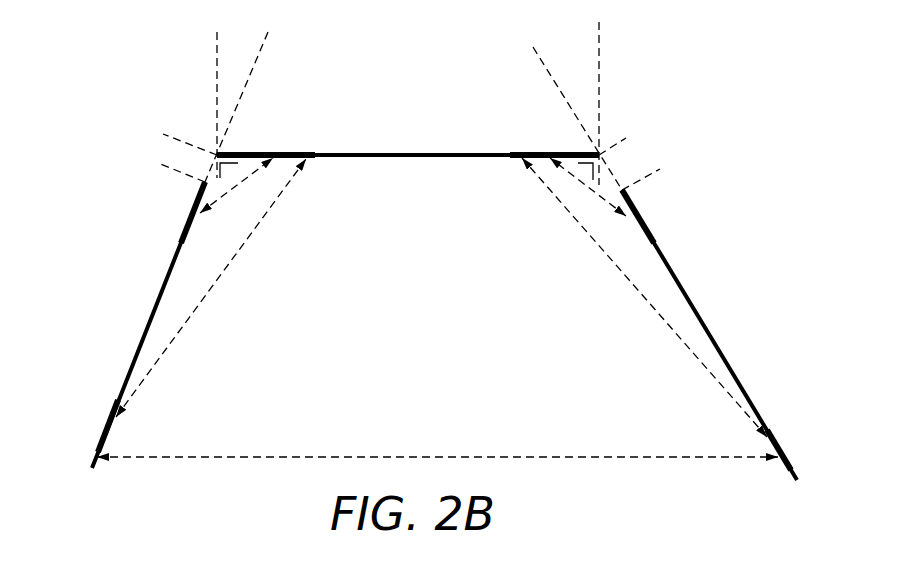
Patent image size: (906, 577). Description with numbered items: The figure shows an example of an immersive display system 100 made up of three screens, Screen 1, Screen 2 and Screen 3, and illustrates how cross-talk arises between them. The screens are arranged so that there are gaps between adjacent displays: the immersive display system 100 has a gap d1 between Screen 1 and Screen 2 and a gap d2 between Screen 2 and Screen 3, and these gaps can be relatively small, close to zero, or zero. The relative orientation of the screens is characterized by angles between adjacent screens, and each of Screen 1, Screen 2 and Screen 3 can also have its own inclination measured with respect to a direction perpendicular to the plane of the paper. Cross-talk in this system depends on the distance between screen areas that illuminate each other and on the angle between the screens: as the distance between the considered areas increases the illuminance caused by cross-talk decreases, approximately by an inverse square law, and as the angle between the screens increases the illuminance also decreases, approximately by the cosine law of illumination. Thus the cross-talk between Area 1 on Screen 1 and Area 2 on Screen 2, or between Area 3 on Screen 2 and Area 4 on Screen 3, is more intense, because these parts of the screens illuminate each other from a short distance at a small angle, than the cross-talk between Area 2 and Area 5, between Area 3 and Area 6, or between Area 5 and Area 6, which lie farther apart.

The immersive display system 100 is at (653, 72).
The screen Screen 1 is at (158, 299).
The screen Screen 2 is at (398, 152).
The screen Screen 3 is at (725, 360).
The screen area Area 1 is at (194, 215).
The screen area Area 2 is at (283, 151).
The screen area Area 3 is at (527, 151).
The screen area Area 4 is at (642, 208).
The screen area Area 5 is at (107, 425).
The screen area Area 6 is at (773, 428).
The gap d1 is at (197, 147).
The gap d2 is at (611, 148).